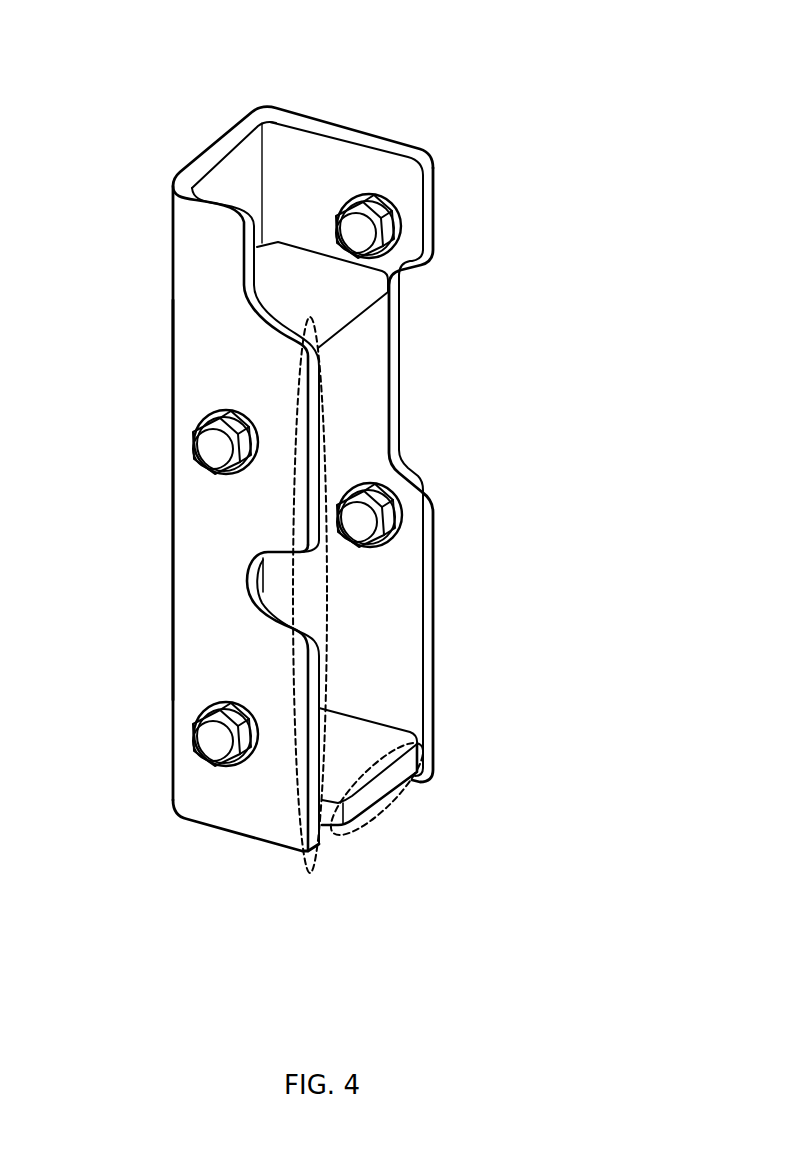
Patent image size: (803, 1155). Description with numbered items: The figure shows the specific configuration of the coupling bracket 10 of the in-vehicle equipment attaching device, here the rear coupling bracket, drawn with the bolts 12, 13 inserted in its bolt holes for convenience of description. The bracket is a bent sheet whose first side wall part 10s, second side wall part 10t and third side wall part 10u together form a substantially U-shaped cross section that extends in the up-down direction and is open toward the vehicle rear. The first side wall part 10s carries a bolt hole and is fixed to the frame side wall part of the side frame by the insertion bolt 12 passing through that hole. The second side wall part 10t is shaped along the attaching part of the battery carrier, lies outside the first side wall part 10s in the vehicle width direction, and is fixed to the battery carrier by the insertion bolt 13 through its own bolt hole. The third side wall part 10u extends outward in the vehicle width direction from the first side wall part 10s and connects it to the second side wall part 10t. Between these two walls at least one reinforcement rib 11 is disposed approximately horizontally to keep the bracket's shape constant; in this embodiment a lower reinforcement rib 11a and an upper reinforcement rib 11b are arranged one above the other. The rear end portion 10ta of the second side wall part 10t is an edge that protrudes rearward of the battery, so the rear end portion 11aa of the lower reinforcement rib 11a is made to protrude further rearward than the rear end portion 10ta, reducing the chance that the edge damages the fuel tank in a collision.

The coupling bracket 10 is at (117, 72).
The second side wall part 10t is at (196, 257).
The third side wall part 10u is at (230, 170).
The first side wall part 10s is at (295, 150).
The rear end portion 10ta is at (310, 876).
The reinforcement rib 11 is at (512, 327).
The lower reinforcement rib 11a is at (372, 738).
The rear end portion 11aa is at (380, 811).
The upper reinforcement rib 11b is at (330, 303).
The insertion bolt 12 is at (397, 222).
The insertion bolt 13 is at (207, 458).